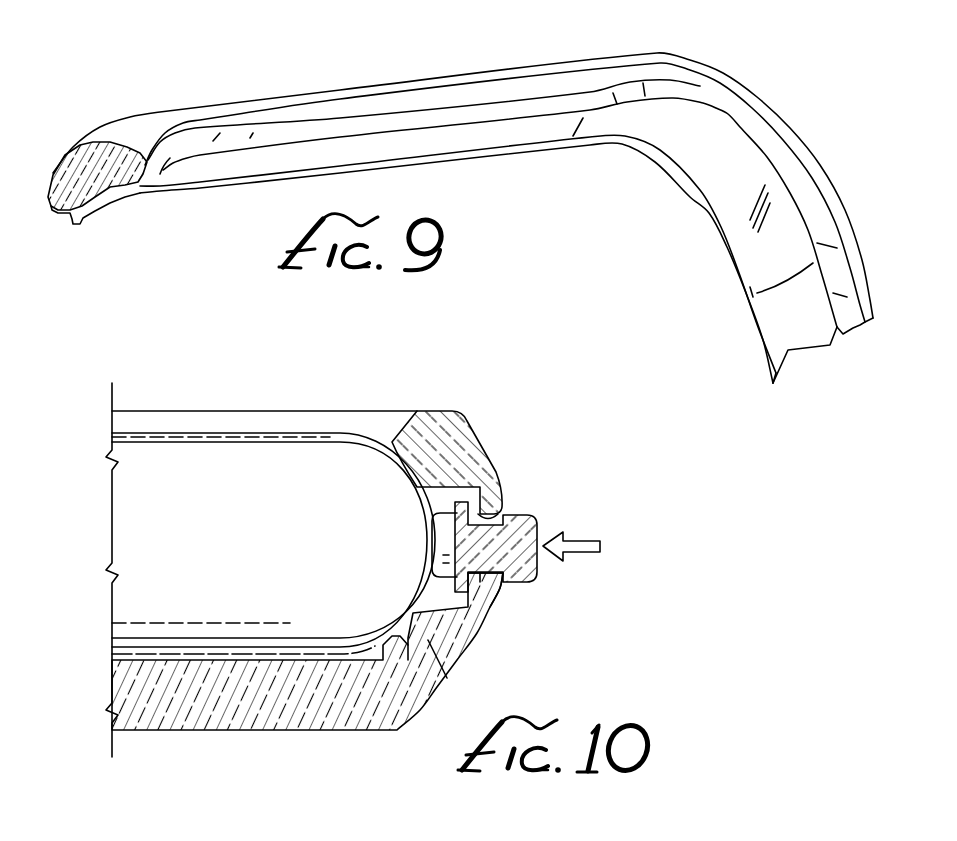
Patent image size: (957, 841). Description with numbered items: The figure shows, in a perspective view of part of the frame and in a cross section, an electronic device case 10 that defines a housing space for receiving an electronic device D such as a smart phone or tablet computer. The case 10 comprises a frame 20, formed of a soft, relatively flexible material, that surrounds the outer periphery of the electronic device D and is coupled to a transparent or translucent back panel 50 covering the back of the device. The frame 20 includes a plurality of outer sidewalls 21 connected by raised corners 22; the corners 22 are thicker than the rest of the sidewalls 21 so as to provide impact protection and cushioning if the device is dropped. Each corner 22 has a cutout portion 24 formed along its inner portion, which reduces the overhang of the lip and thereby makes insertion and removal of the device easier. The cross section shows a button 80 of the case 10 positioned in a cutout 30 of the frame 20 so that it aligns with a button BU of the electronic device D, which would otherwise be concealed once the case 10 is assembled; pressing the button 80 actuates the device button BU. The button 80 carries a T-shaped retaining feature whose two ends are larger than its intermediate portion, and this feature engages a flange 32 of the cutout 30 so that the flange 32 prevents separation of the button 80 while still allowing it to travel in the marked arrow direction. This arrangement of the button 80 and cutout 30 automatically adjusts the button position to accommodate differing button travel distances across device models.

In FIG. 10, the electronic device case 10 is at (370, 548).
In FIG. 10, the frame 20 is at (453, 433).
In FIG. 9, the outer sidewalls 21 is at (398, 92).
In FIG. 9, the raised corners 22 is at (460, 192).
In FIG. 9, the cutout portion 24 is at (194, 150).
In FIG. 10, the cutout 30 is at (510, 590).
In FIG. 10, the flange 32 is at (488, 514).
In FIG. 10, the back panel 50 is at (272, 722).
In FIG. 10, the button 80 is at (546, 507).
In FIG. 10, the buttons of the electronic device BU is at (437, 542).
In FIG. 10, the electronic device D is at (247, 560).